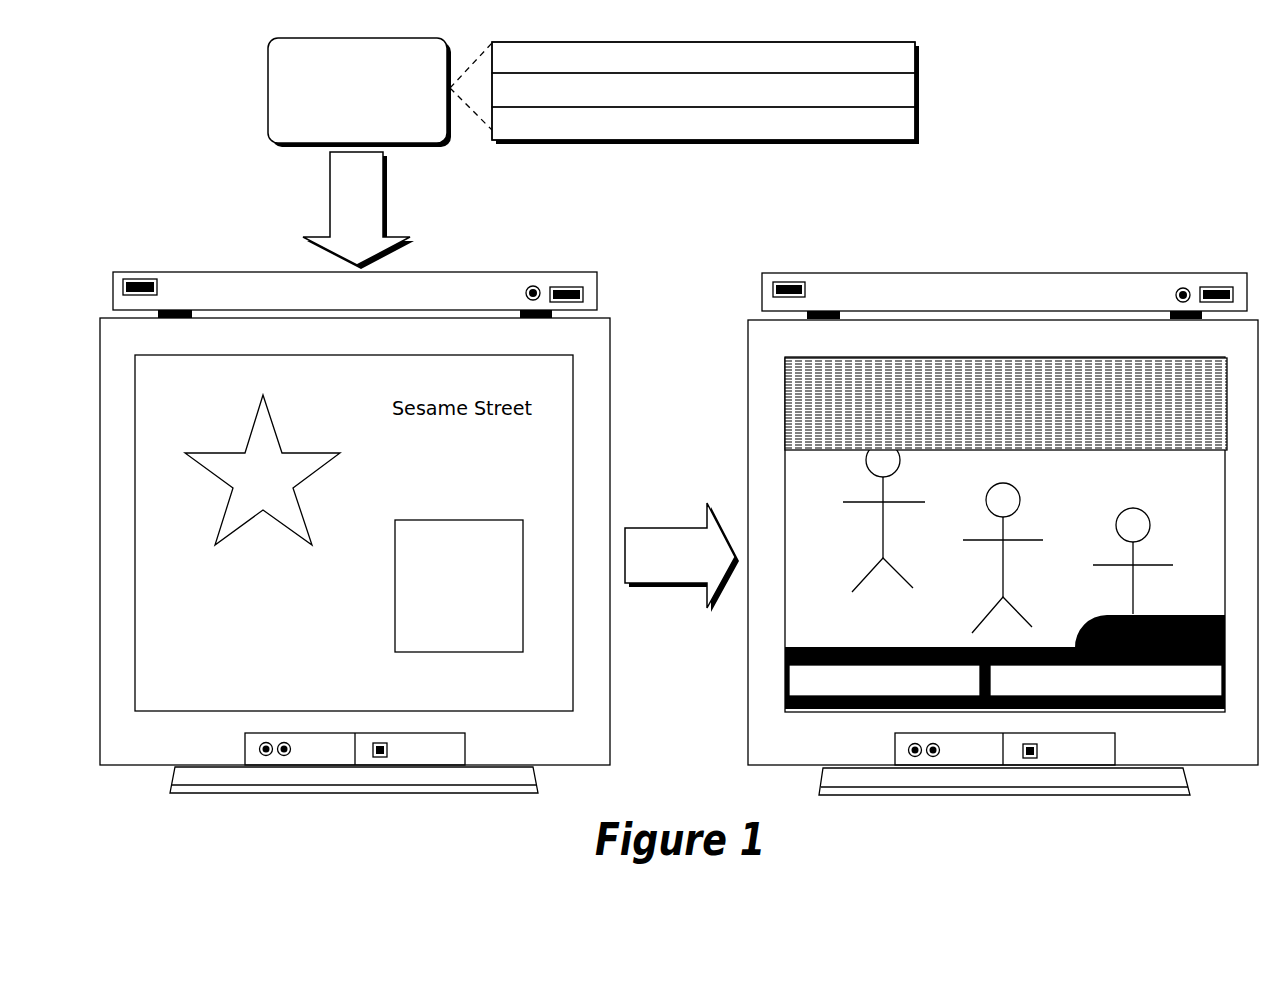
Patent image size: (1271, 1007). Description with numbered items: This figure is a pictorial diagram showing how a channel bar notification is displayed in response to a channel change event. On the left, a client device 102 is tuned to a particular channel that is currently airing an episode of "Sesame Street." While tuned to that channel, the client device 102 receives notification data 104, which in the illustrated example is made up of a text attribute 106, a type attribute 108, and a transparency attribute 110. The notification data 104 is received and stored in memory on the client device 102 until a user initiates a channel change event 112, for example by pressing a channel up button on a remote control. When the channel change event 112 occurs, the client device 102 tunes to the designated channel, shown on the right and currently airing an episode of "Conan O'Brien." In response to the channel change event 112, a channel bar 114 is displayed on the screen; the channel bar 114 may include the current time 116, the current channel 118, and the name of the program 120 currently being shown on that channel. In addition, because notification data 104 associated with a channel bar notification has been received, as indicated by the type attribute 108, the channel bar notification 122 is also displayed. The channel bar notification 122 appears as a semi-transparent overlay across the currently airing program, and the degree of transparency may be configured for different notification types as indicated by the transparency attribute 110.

The client device 102 is at (480, 270).
The notification data 104 is at (268, 86).
The text attribute 106 is at (920, 46).
The type attribute 108 is at (920, 76).
The transparency attribute 110 is at (920, 108).
The channel change event 112 is at (640, 528).
The channel bar 114 is at (840, 648).
The current time 116 is at (1125, 622).
The current channel 118 is at (905, 697).
The name of the program 120 is at (1095, 698).
The channel bar notification 122 is at (1138, 376).